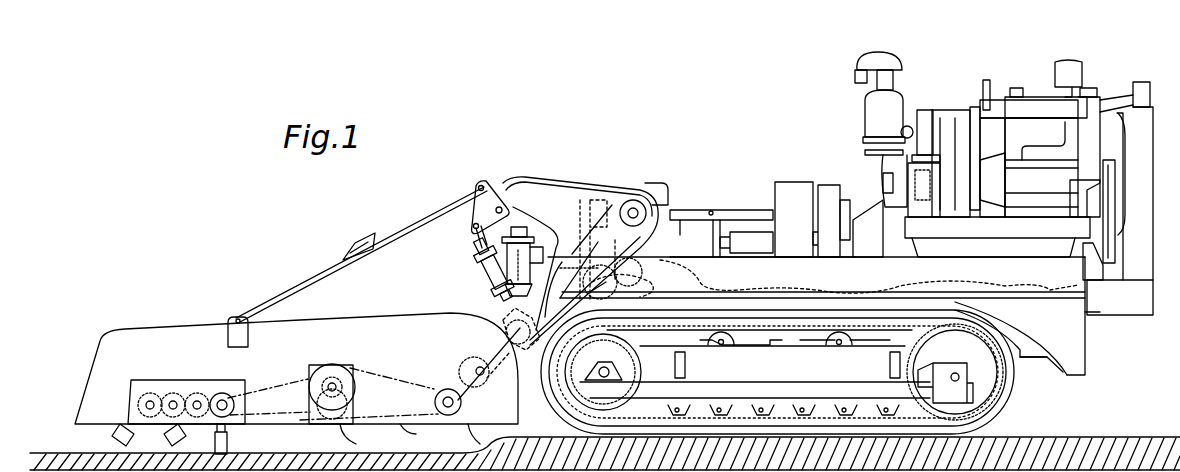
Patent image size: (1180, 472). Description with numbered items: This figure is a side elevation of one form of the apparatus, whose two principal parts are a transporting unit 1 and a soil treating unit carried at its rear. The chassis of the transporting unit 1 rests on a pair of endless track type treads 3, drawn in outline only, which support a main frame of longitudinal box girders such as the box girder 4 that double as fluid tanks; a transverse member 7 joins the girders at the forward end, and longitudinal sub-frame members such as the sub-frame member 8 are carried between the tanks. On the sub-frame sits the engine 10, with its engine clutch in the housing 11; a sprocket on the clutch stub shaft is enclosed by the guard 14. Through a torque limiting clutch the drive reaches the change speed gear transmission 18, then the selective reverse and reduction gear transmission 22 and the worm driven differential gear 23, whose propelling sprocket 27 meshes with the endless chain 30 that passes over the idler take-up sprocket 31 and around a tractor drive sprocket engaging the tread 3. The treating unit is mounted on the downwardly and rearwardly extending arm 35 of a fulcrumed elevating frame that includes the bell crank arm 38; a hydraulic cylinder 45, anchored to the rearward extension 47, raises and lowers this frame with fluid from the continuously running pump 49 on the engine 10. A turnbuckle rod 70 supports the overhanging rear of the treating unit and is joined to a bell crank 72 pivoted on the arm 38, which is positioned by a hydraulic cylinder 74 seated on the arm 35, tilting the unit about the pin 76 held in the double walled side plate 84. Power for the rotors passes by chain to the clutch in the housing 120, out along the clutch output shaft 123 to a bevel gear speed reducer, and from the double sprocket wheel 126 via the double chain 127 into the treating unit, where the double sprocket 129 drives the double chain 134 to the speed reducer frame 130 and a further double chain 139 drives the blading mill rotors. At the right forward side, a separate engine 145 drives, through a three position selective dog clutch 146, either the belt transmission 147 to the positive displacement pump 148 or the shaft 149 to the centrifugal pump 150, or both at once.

The transporting unit 1 is at (763, 186).
The endless track type treads 3 is at (1010, 410).
The box girder 4 is at (1059, 296).
The transverse member 7 is at (1030, 371).
The longitudinal sub-frame member 8 is at (1121, 315).
The engine 10 is at (936, 107).
The housing 11 is at (854, 219).
The guard 14 is at (830, 184).
The change speed gear transmission 18 is at (745, 225).
The selective reverse and reduction gear transmission 22 is at (689, 217).
The worm driven differential gear 23 is at (601, 248).
The propelling sprocket 27 is at (602, 294).
The endless chain 30 is at (648, 304).
The idler take-up sprocket 31 is at (646, 290).
The arm 35 is at (524, 354).
The bell crank arm 38 is at (564, 181).
The hydraulic cylinder 45 is at (530, 248).
The rearward extension 47 is at (577, 257).
The pump 49 is at (1089, 283).
The turnbuckle rod 70 is at (303, 280).
The bell crank 72 is at (489, 180).
The hydraulic cylinder 74 is at (487, 286).
The pin 76 is at (485, 382).
The double walled side plate 84 is at (103, 358).
The clutch housing 120 is at (792, 182).
The clutch output shaft 123 is at (712, 209).
The double sprocket wheel 126 is at (634, 195).
The double chain 127 is at (460, 365).
The double sprocket 129 is at (325, 366).
The speed reducer frame 130 is at (314, 414).
The double chain 134 is at (391, 370).
The double chain 139 is at (283, 380).
The engine 145 is at (1031, 95).
The three position selective dog clutch 146 is at (997, 237).
The belt transmission 147 is at (970, 95).
The positive displacement pump 148 is at (910, 109).
The shaft 149 is at (924, 190).
The centrifugal pump 150 is at (882, 188).